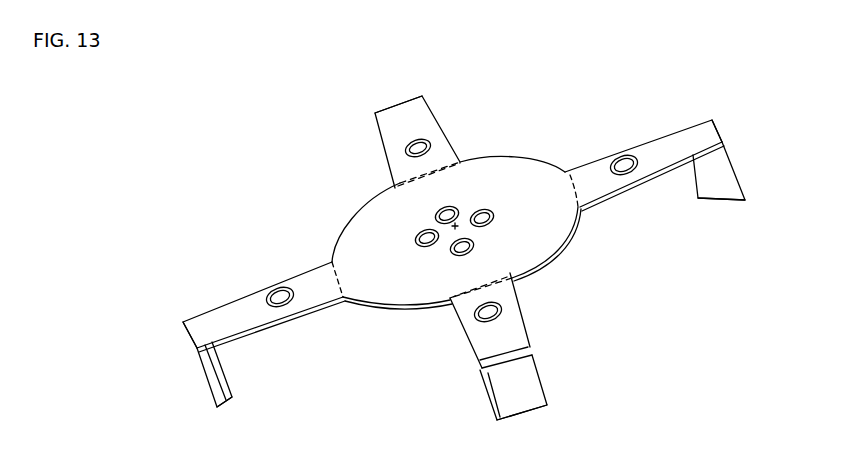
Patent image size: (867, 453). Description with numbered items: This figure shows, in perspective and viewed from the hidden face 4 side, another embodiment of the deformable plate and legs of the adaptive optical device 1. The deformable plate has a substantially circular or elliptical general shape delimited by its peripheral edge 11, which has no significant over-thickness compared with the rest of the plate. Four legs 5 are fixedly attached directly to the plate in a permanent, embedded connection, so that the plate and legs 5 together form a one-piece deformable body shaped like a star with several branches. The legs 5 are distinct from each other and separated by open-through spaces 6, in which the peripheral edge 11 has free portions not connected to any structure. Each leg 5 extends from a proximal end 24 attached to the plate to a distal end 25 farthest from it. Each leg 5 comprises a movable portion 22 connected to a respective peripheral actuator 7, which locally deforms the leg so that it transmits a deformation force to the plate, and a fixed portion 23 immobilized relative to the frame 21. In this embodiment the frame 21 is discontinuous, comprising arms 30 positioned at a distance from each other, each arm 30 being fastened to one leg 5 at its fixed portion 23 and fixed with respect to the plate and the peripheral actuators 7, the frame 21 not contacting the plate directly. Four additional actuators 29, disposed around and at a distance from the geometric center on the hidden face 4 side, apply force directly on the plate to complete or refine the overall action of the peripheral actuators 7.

The adaptive optical device 1 is at (266, 83).
The hidden face 4 is at (372, 226).
The legs 5 is at (440, 122).
The spaces 6 is at (514, 134).
The peripheral actuators 7 is at (404, 152).
The peripheral edge 11 is at (573, 232).
The frame 21 is at (742, 180).
The movable portion 22 is at (452, 158).
The fixed portion 23 is at (410, 108).
The proximal end 24 is at (400, 187).
The distal end 25 is at (378, 112).
The additional actuators 29 is at (412, 241).
The arms 30 is at (733, 202).